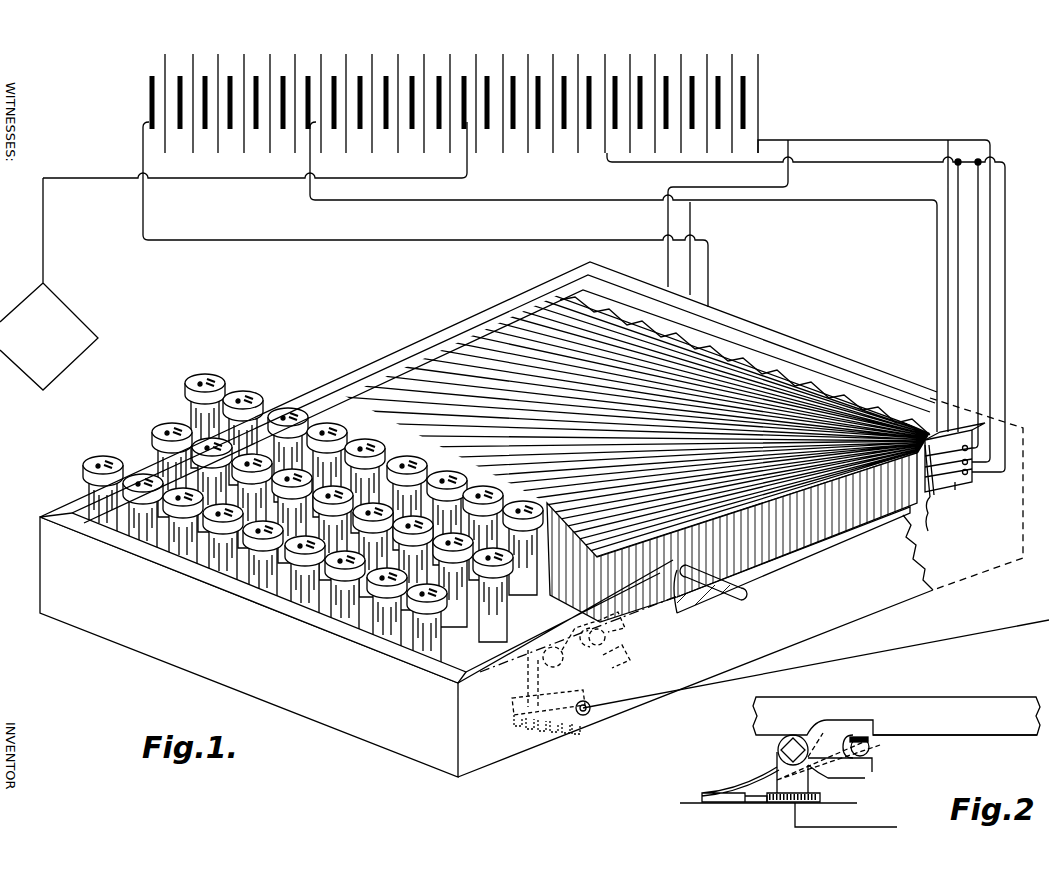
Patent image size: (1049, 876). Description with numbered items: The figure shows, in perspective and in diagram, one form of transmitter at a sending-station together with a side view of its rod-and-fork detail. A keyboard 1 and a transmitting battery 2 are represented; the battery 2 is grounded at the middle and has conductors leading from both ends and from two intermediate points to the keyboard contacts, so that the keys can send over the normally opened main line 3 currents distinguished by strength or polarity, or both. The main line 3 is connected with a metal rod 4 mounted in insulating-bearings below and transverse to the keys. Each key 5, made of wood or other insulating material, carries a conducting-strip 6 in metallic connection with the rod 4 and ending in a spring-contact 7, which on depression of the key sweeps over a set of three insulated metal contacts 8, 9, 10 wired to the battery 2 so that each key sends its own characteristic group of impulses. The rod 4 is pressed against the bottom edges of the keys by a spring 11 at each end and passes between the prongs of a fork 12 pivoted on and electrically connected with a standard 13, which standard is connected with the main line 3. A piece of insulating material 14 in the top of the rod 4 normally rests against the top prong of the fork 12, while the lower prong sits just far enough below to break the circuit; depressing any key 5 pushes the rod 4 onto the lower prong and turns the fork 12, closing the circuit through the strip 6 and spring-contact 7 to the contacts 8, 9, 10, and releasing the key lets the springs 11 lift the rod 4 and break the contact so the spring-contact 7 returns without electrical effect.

In FIG. 1, the keyboard 1 is at (313, 526).
In FIG. 1, the battery 2 is at (524, 263).
In FIG. 1, the main line 3 is at (544, 519).
In FIG. 2, the main line 3 is at (788, 815).
In FIG. 1, the metal rod 4 is at (610, 638).
In FIG. 2, the metal rod 4 is at (872, 747).
In FIG. 1, the key 5 is at (631, 428).
In FIG. 2, the key 5 is at (896, 716).
In FIG. 1, the conducting-strip 6 is at (800, 566).
In FIG. 2, the conducting-strip 6 is at (955, 721).
In FIG. 1, the spring-contact 7 is at (927, 500).
In FIG. 1, the metal contact 8 is at (944, 483).
In FIG. 1, the metal contact 9 is at (957, 480).
In FIG. 1, the metal contact 10 is at (960, 443).
In FIG. 2, the spring 11 is at (740, 784).
In FIG. 1, the fork 12 is at (585, 668).
In FIG. 2, the fork 12 is at (828, 756).
In FIG. 1, the standard 13 is at (528, 688).
In FIG. 2, the standard 13 is at (812, 785).
In FIG. 1, the piece of insulating material 14 is at (603, 665).
In FIG. 2, the piece of insulating material 14 is at (877, 731).